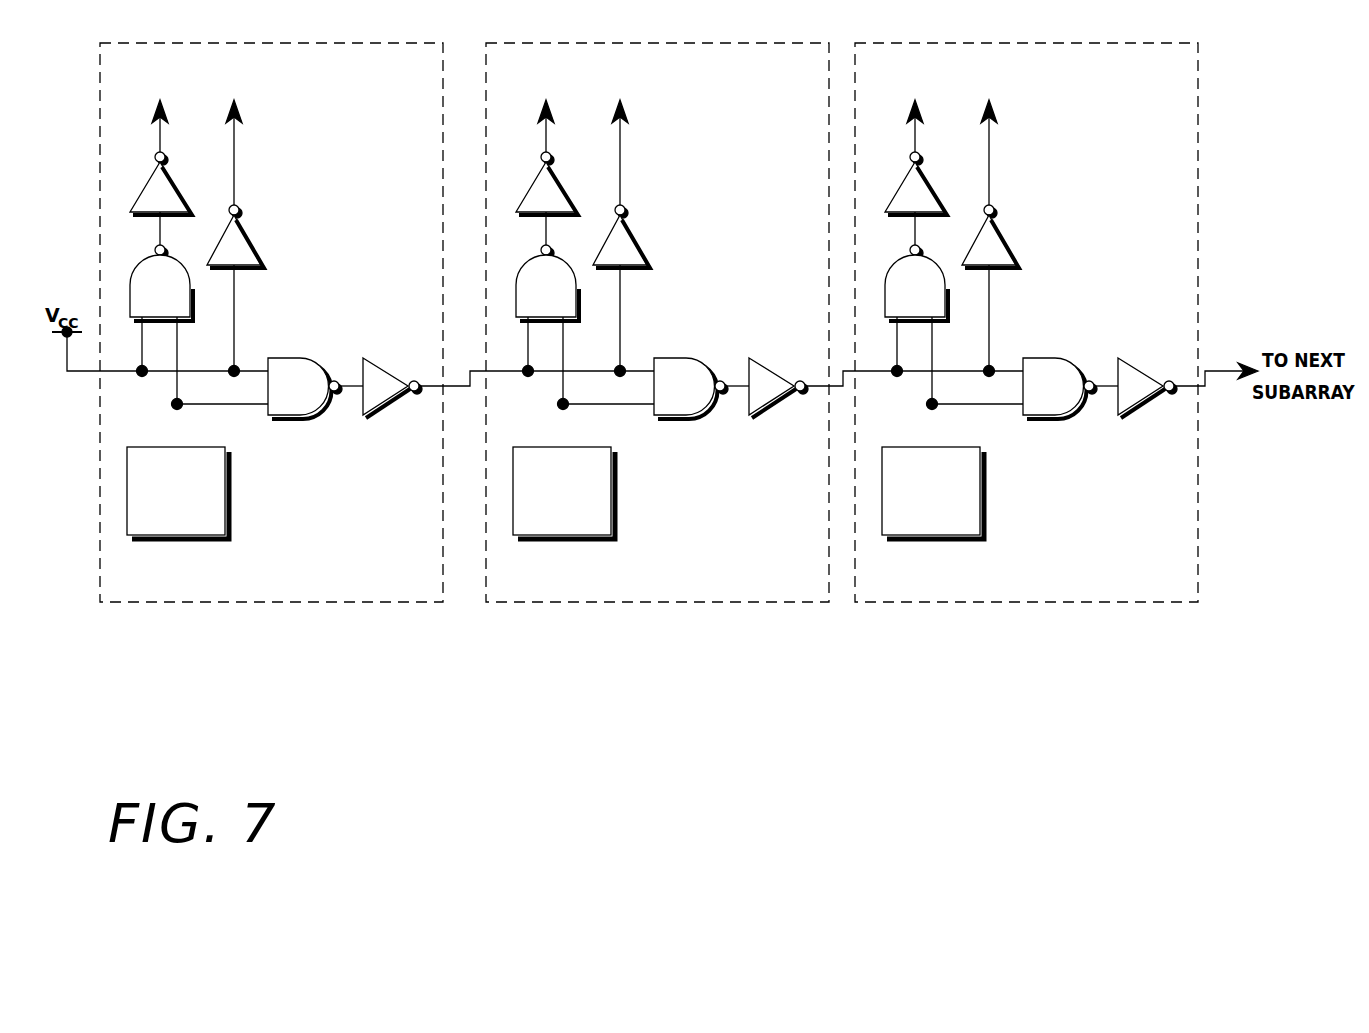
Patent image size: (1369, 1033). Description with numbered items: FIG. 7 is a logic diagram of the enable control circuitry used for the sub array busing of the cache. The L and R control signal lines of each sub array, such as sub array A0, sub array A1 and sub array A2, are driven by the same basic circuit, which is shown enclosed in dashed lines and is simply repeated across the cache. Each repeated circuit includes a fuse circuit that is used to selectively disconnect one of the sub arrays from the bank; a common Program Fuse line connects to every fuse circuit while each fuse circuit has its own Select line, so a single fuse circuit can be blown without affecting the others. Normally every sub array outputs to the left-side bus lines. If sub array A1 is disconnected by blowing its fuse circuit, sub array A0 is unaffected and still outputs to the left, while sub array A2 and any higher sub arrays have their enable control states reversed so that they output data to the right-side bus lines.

The sub array A0 is at (295, 606).
The sub array A1 is at (693, 606).
The sub array A2 is at (1090, 606).